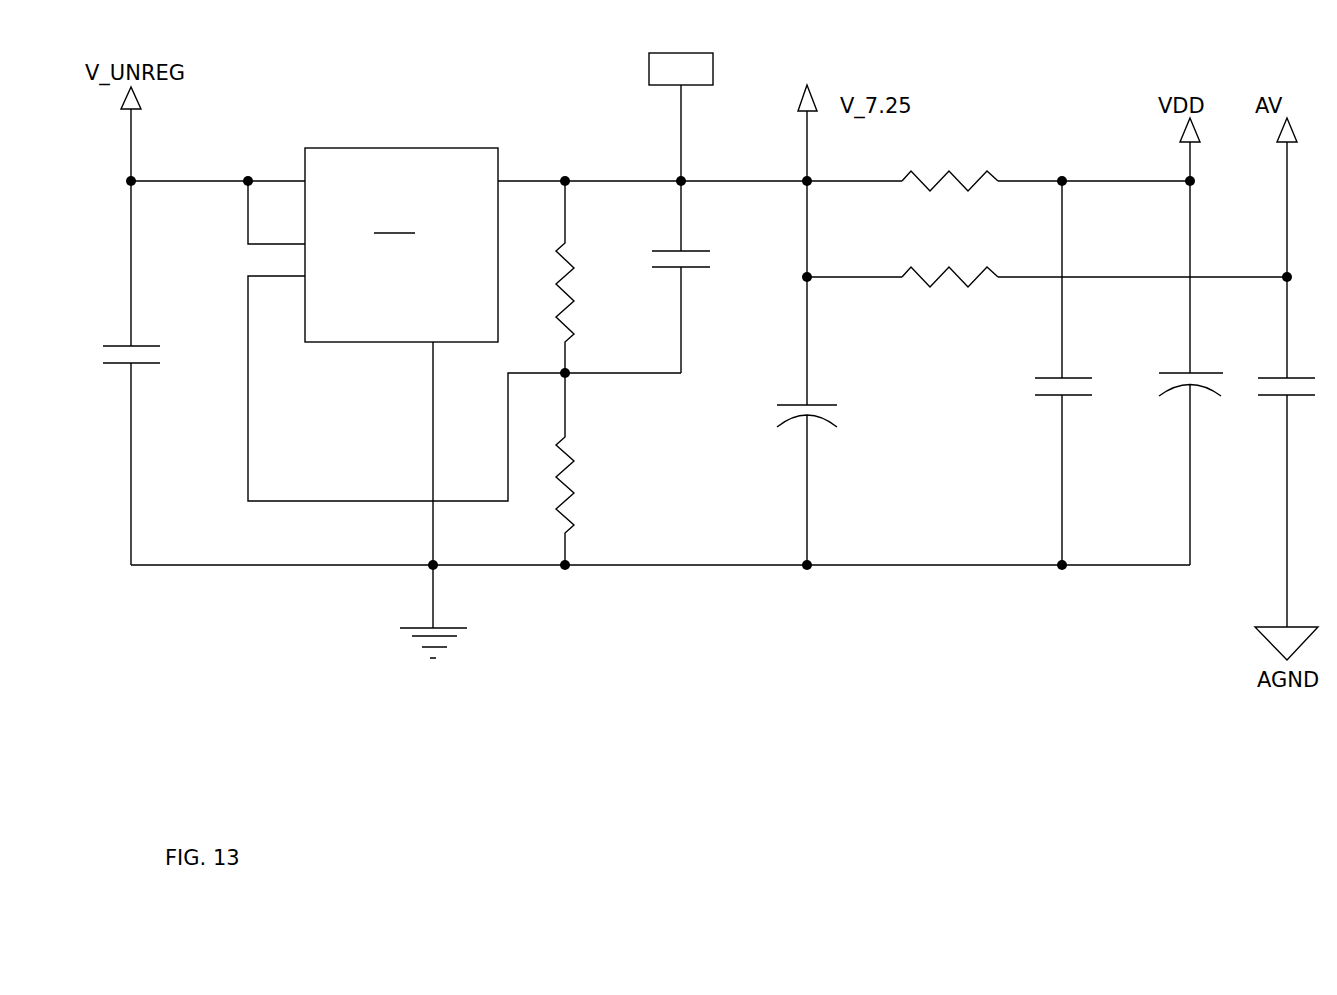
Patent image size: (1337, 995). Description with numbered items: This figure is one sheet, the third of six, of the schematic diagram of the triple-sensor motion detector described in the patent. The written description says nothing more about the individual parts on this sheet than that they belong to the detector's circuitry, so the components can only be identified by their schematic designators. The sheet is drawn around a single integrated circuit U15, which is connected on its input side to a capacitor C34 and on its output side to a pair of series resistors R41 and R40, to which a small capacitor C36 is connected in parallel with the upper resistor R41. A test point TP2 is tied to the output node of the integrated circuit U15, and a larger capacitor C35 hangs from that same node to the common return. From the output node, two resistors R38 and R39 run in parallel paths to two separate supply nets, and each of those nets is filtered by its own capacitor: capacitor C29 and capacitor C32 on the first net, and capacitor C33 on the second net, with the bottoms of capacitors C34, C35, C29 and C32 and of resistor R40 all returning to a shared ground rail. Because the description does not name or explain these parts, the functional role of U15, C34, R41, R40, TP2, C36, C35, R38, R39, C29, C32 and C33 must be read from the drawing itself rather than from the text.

The LP2980-ADJ voltage regulator U15 is at (394, 252).
The 1.0uF input capacitor C34 is at (163, 455).
The 255K feedback resistor R41 is at (565, 277).
The 51.1K feedback resistor R40 is at (572, 469).
The test point TP2 is at (681, 104).
The 7pF feedback capacitor C36 is at (703, 277).
The 4.7uF output capacitor C35 is at (798, 457).
The 1 ohm resistor to VDD R38 is at (938, 199).
The 1 ohm resistor to AV R39 is at (938, 296).
The 1.0uF decoupling capacitor C29 is at (1061, 373).
The 100uF/10V decoupling capacitor C32 is at (1172, 443).
The 1.0uF decoupling capacitor C33 is at (1279, 402).